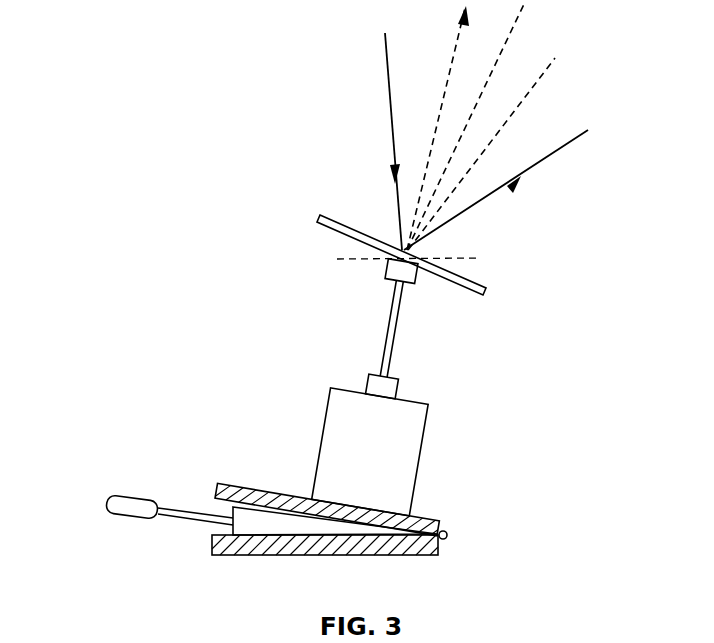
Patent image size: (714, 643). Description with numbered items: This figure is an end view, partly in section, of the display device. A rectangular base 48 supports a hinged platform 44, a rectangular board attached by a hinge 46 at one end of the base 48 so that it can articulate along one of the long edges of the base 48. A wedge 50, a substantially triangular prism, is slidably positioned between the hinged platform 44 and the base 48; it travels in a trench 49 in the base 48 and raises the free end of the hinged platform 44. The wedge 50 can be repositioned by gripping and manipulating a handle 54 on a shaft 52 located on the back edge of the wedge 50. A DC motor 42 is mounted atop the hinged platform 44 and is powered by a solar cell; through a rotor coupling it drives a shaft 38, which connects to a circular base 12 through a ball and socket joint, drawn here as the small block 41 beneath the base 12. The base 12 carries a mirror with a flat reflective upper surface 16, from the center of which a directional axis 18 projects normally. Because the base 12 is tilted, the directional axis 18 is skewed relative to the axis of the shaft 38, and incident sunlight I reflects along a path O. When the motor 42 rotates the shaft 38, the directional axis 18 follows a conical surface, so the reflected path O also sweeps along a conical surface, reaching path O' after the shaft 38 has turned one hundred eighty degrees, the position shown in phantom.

The incident sunlight I is at (388, 80).
The reflected path O is at (496, 190).
The reflected path O' is at (433, 126).
The directional axis 18 is at (517, 22).
The circular base 12 is at (486, 300).
The flat reflective upper surface 16 is at (485, 289).
The mirror mount block 41 is at (405, 284).
The shaft 38 is at (395, 350).
The DC motor 42 is at (427, 444).
The hinged platform 44 is at (433, 520).
The hinge 46 is at (448, 535).
The rectangular base 48 is at (398, 552).
The wedge 50 is at (257, 532).
The shaft 52 is at (172, 508).
The handle 54 is at (107, 502).
The trench 49 is at (210, 537).